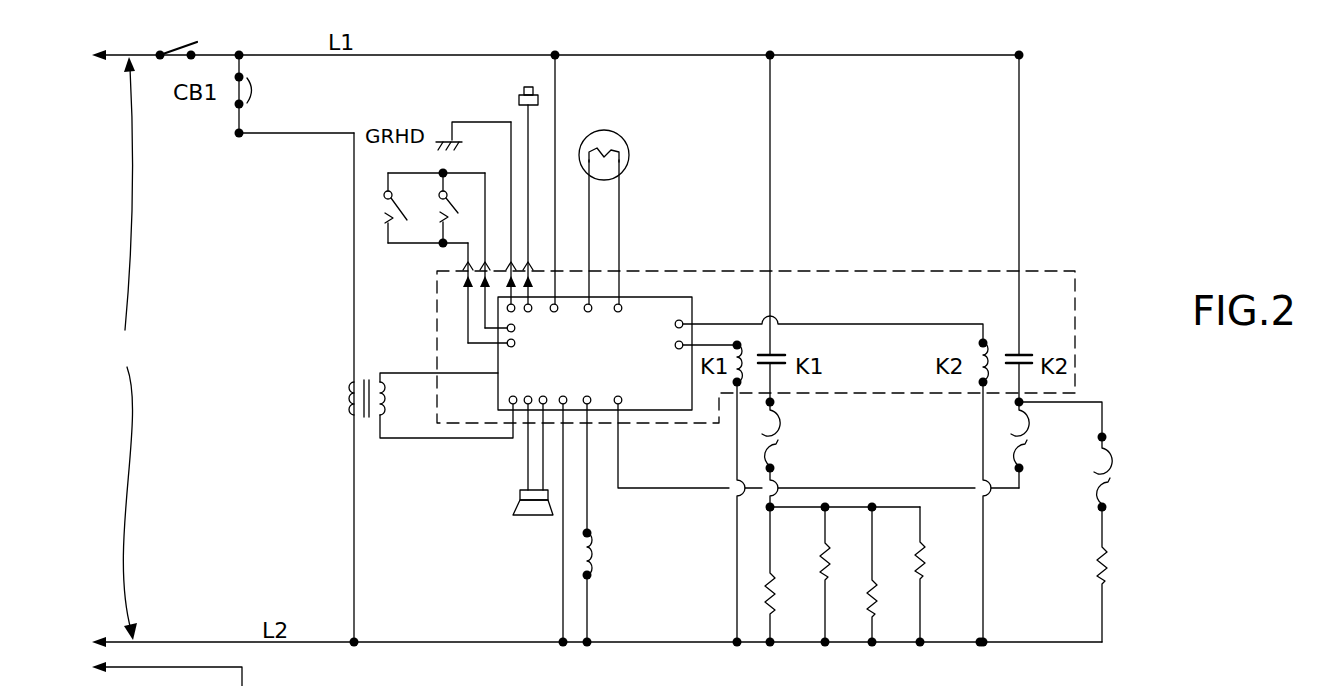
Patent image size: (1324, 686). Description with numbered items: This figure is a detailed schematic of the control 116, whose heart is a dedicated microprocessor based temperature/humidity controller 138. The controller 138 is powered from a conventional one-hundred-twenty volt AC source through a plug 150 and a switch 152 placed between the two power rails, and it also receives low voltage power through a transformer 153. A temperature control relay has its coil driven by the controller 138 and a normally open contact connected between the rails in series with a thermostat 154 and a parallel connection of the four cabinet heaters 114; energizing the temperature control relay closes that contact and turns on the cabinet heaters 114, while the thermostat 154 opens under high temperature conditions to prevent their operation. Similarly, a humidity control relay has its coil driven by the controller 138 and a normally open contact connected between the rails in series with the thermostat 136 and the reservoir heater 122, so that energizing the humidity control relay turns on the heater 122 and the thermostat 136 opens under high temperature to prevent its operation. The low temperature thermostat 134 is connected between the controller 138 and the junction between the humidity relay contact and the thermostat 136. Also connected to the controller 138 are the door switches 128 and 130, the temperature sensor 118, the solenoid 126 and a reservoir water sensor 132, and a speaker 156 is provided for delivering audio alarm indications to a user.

The cabinet heaters 114 is at (776, 600).
The control 116 is at (1047, 268).
The temperature sensor 118 is at (625, 148).
The reservoir heater 122 is at (1105, 565).
The solenoid 126 is at (592, 553).
The door switch 128 is at (387, 210).
The door switch 130 is at (457, 198).
The reservoir water sensor 132 is at (519, 98).
The low temperature thermostat 134 is at (1022, 451).
The thermostat 136 is at (1110, 468).
The temperature/humidity controller 138 is at (677, 302).
The plug 150 is at (126, 348).
The switch 152 is at (202, 46).
The transformer 153 is at (348, 398).
The thermostat 154 is at (780, 432).
The speaker 156 is at (518, 515).